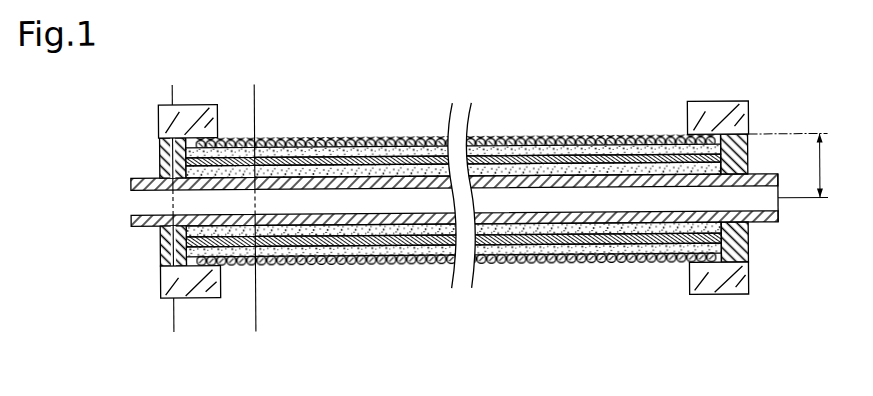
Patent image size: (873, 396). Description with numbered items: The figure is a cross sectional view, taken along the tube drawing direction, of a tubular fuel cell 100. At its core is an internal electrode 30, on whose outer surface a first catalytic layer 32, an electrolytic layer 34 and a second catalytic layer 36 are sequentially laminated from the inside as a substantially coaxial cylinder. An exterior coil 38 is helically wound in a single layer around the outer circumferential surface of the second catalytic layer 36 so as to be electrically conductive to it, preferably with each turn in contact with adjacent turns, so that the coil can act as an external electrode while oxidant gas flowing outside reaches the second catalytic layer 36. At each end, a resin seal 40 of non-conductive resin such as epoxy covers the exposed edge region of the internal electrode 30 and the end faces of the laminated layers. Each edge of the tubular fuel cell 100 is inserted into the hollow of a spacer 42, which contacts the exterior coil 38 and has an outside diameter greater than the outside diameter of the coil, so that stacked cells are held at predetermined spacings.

The tubular fuel cell 100 is at (471, 216).
The internal electrode 30 is at (433, 172).
The first catalytic layer 32 is at (405, 158).
The electrolytic layer 34 is at (357, 147).
The second catalytic layer 36 is at (308, 138).
The exterior coil 38 is at (510, 137).
The resin seal 40 is at (160, 152).
The spacer 42 is at (159, 123).